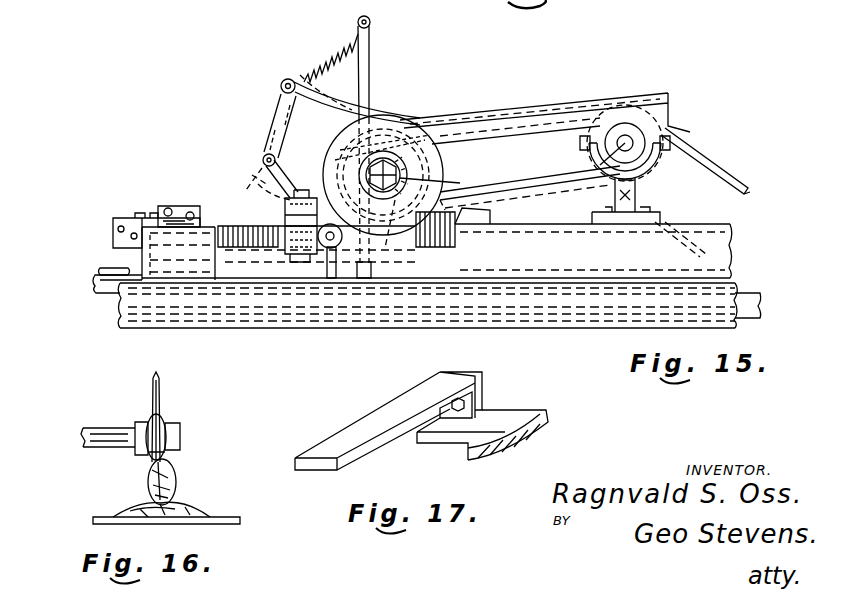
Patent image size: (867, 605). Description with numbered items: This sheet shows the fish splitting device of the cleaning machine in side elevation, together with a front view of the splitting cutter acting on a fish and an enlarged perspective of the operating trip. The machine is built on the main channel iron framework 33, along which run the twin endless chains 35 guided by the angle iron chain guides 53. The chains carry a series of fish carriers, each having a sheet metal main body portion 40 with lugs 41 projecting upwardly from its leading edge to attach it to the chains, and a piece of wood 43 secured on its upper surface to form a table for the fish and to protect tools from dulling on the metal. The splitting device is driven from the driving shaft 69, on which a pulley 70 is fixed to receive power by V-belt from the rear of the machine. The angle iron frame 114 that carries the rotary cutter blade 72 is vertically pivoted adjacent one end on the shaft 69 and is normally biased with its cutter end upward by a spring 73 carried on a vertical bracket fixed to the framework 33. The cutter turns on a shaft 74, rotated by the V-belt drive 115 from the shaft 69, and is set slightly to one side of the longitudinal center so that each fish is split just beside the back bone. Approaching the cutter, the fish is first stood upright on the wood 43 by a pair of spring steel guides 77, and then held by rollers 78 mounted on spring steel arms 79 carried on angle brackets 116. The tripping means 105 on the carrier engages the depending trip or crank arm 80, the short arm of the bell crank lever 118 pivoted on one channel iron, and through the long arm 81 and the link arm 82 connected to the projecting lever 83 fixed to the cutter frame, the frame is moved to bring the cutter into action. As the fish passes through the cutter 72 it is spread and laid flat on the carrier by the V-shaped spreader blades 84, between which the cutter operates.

In FIG. 15, the channel iron framework 33 is at (135, 313).
In FIG. 15, the angle iron chain guide 53 is at (95, 284).
In FIG. 15, the endless chain 35 is at (112, 264).
In FIG. 15, the angle bracket 116 is at (178, 206).
In FIG. 15, the spring steel guide 77 is at (220, 224).
In FIG. 15, the roller 78 is at (280, 188).
In FIG. 15, the long arm of bell crank lever 81 is at (282, 182).
In FIG. 15, the spring steel arm 79 is at (260, 170).
In FIG. 15, the link arm 82 is at (282, 118).
In FIG. 15, the projecting lever 83 is at (282, 82).
In FIG. 15, the spring 73 is at (328, 62).
In FIG. 15, the rotary cutter blade 72 is at (395, 118).
In FIG. 16, the rotary cutter blade 72 is at (160, 402).
In FIG. 15, the shaft 74 is at (410, 175).
In FIG. 16, the shaft 74 is at (116, 430).
In FIG. 15, the angle iron frame 114 is at (492, 110).
In FIG. 15, the V-belt drive 115 is at (505, 192).
In FIG. 15, the spreader blade 84 is at (425, 247).
In FIG. 15, the driving shaft 69 is at (598, 165).
In FIG. 15, the pulley 70 is at (650, 172).
In FIG. 15, the trip or crank arm 80 is at (338, 248).
In FIG. 15, the bell crank lever 118 is at (336, 250).
In FIG. 16, the piece of wood 43 is at (200, 506).
In FIG. 16, the main body portion 40 is at (240, 526).
In FIG. 17, the main body portion 40 is at (525, 410).
In FIG. 17, the lug 41 is at (490, 394).
In FIG. 17, the tripping means 105 is at (375, 425).